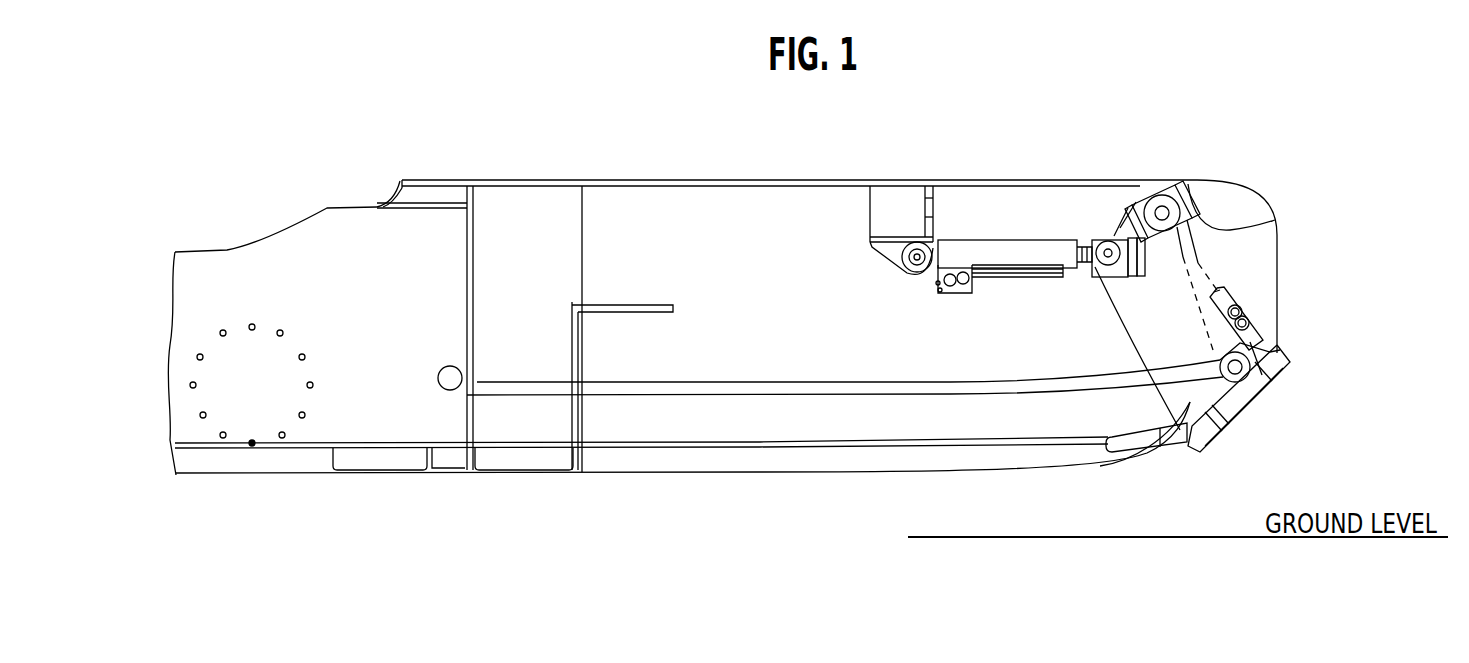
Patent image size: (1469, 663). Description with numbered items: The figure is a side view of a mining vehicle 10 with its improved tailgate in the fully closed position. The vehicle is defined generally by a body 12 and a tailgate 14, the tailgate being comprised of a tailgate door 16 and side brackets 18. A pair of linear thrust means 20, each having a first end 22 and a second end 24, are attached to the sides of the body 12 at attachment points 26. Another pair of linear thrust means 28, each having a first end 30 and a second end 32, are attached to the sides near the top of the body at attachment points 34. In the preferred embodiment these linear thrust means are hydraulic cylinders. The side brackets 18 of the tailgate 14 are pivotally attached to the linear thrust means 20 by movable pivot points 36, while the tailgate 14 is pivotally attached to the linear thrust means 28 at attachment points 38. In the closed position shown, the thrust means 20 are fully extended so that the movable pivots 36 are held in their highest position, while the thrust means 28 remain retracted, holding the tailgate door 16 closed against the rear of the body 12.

The mining vehicle 10 is at (272, 225).
The body 12 is at (618, 183).
The tailgate 14 is at (1223, 422).
The tailgate door 16 is at (1247, 393).
The side brackets 18 is at (1190, 402).
The linear thrust means 20 is at (1240, 313).
The first end 22 is at (1273, 221).
The second end 24 is at (1273, 347).
The attachment points 26 is at (1242, 383).
The linear thrust means 28 is at (997, 250).
The first end 30 is at (1108, 250).
The second end 32 is at (911, 250).
The attachment points 34 is at (873, 237).
The movable pivot points 36 is at (1173, 200).
The attachment points 38 is at (1103, 250).